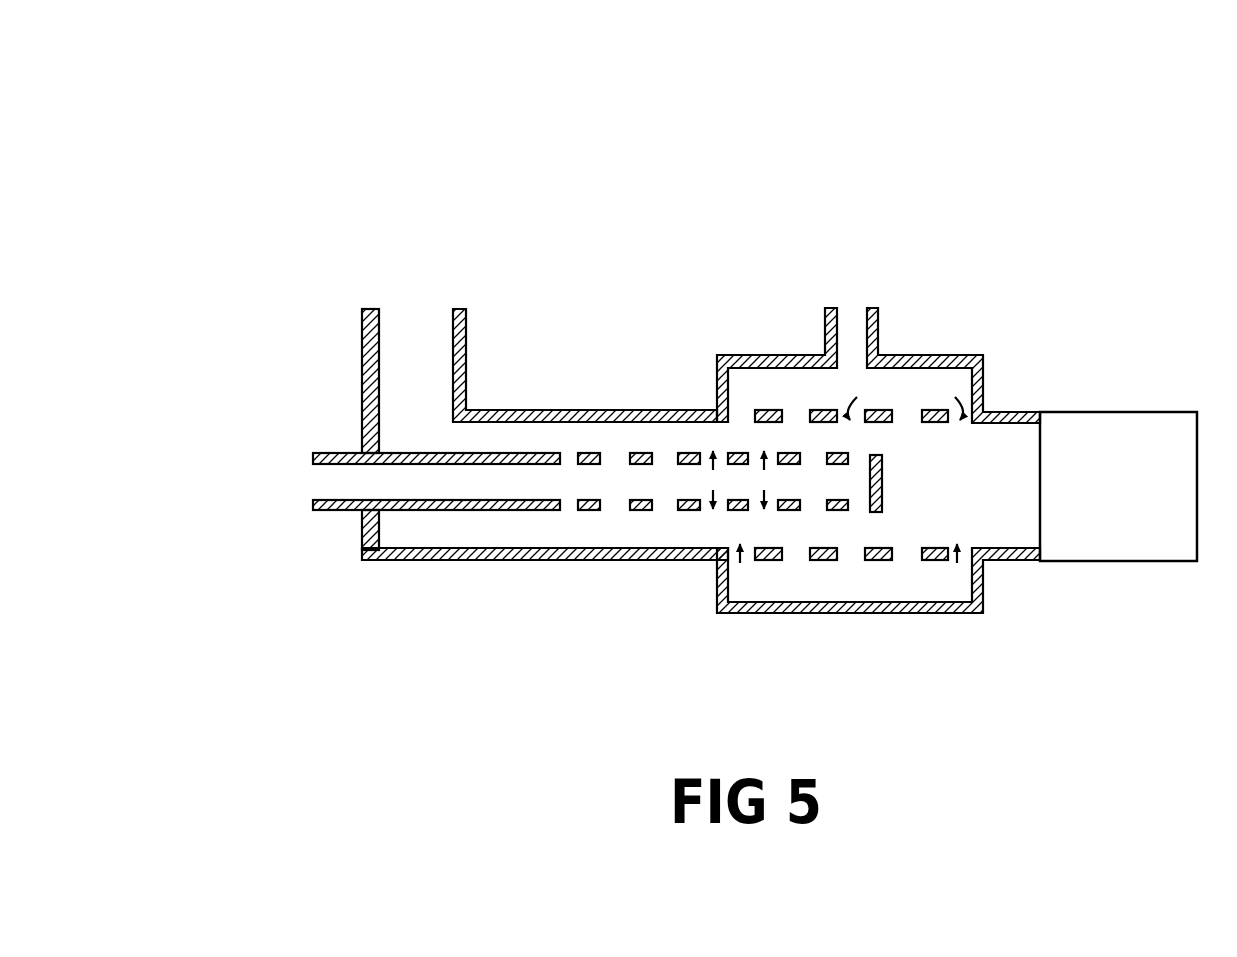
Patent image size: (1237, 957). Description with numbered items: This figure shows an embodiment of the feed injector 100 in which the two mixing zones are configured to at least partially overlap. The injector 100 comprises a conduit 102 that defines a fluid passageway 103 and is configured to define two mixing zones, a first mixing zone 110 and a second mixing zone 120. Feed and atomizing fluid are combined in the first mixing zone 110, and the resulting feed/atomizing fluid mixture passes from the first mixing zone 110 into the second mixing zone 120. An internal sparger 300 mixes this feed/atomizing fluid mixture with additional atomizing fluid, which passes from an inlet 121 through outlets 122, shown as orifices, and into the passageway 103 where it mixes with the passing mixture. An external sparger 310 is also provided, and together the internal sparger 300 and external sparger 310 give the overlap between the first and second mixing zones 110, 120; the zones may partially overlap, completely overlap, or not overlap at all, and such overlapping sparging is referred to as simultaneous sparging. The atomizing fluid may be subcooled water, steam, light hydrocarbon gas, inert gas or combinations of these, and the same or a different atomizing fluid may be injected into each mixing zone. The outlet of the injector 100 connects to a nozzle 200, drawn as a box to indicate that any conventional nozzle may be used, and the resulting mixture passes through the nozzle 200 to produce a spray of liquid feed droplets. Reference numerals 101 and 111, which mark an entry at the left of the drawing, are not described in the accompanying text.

The feed injector 100 is at (967, 186).
The first gas supply pipe 101 is at (417, 317).
The conduit 102 is at (504, 565).
The fluid passageway 103 is at (563, 437).
The first mixing zone 110 is at (652, 436).
The gas introduced into inner tube 111 is at (300, 487).
The second mixing zone 120 is at (845, 535).
The inlet 121 is at (851, 307).
The outlets 122 is at (848, 562).
The nozzle 200 is at (1076, 412).
The internal sparger 300 is at (403, 514).
The external sparger 310 is at (945, 355).